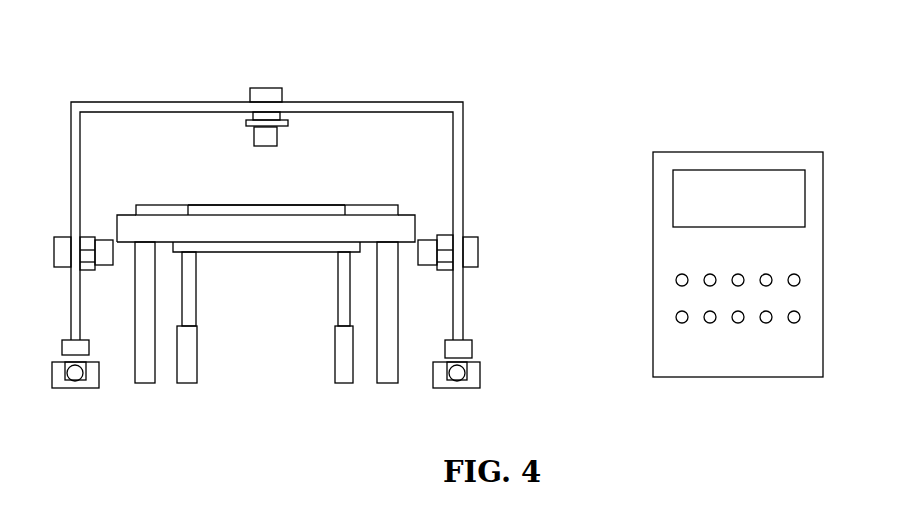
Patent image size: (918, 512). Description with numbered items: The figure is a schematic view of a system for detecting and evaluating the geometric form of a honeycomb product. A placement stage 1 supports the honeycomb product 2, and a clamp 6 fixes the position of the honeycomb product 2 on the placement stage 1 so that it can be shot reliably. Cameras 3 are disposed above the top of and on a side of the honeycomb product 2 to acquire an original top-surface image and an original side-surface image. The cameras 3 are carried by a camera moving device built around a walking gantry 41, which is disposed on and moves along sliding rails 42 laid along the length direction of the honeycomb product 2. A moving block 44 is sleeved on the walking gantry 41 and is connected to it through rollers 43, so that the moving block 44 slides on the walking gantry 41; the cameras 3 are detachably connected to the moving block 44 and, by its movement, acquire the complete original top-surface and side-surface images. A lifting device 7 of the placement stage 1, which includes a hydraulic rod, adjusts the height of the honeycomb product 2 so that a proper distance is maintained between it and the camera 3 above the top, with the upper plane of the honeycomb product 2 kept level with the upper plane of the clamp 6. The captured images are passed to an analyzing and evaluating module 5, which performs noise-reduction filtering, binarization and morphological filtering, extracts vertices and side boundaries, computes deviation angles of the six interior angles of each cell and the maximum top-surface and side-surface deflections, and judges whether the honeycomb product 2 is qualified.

The placement stage 1 is at (135, 228).
The honeycomb product 2 is at (318, 205).
The cameras 3 is at (277, 135).
The analyzing and evaluating module 5 is at (804, 252).
The clamp 6 is at (372, 205).
The lifting device 7 is at (188, 348).
The walking gantry 41 is at (413, 108).
The sliding rails 42 is at (482, 373).
The rollers 43 is at (255, 113).
The moving block 44 is at (265, 90).